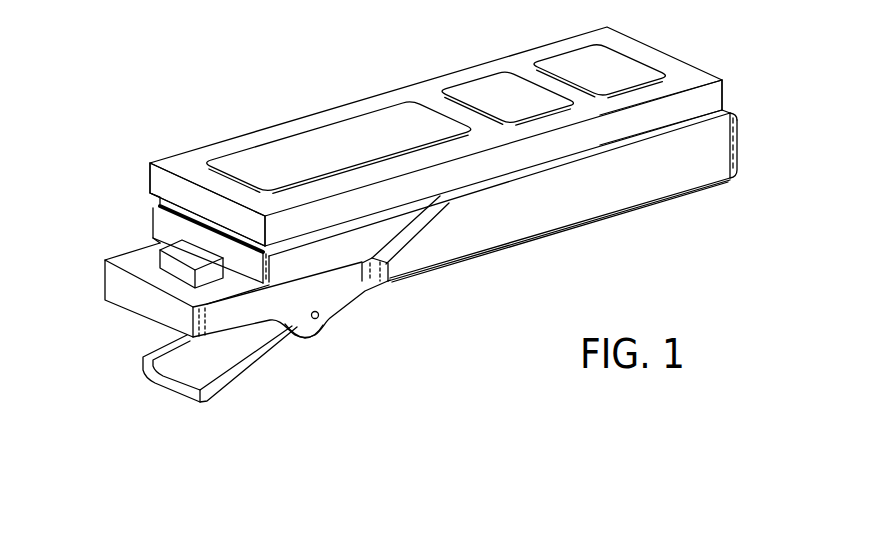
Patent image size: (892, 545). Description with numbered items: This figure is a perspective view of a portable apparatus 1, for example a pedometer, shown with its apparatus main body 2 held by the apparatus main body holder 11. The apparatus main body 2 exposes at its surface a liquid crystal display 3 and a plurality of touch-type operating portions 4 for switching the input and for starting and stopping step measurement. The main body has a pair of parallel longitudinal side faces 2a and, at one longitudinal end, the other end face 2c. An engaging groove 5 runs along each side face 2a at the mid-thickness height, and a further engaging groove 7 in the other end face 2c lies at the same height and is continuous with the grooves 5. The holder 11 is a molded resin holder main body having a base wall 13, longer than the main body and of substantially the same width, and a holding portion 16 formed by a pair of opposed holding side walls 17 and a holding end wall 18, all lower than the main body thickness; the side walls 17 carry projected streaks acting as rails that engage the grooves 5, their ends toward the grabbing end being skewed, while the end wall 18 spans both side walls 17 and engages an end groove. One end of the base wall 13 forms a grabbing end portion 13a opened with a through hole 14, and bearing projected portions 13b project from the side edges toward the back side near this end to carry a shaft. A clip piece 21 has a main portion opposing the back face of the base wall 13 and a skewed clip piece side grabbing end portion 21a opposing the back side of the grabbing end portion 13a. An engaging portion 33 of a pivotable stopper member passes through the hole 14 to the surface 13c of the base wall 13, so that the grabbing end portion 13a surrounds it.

The portable apparatus 1 is at (133, 227).
The apparatus main body 2 is at (430, 77).
The side face 2a is at (690, 105).
The other end face 2c is at (213, 200).
The display 3 is at (380, 138).
The operating portions 4 is at (603, 72).
The engaging groove 5 is at (356, 222).
The engaging groove 7 is at (187, 213).
The apparatus main body holder 11 is at (432, 283).
The base wall 13 is at (337, 292).
The holder main body grabbing end portion 13a is at (143, 305).
The bearing projected portion 13b is at (313, 334).
The surface of the base wall 13c is at (217, 287).
The through hole 14 is at (107, 282).
The holding portion 16 is at (738, 142).
The holding side wall 17 is at (570, 207).
The holding end wall 18 is at (727, 105).
The clip piece 21 is at (484, 259).
The clip piece side grabbing end portion 21a is at (168, 382).
The engaging portion 33 is at (187, 258).